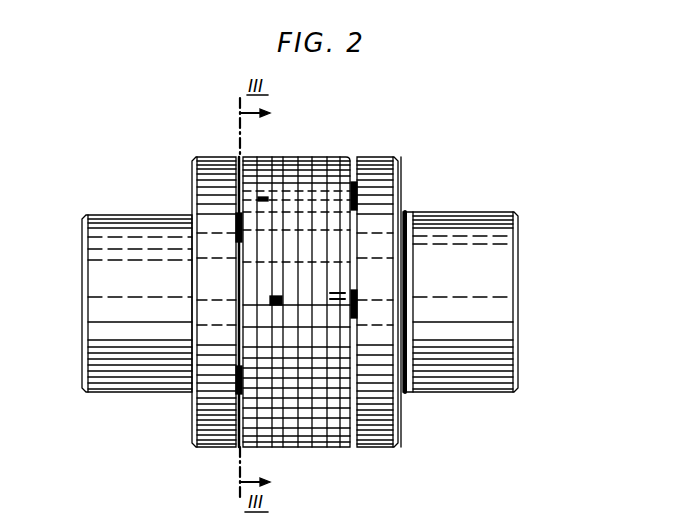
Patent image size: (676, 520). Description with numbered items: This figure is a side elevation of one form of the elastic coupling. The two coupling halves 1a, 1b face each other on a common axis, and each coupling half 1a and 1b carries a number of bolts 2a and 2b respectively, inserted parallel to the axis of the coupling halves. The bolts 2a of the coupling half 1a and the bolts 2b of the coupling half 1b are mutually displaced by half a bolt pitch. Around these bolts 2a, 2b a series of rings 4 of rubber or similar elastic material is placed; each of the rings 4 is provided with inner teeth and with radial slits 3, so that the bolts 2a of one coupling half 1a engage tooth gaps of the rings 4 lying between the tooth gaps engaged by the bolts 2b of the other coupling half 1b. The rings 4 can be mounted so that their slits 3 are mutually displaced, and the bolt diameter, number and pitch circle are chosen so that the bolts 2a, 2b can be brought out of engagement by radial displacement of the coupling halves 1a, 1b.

The coupling half 1a is at (381, 394).
The coupling half 1b is at (223, 389).
The bolts 2a is at (357, 190).
The bolts 2b is at (236, 226).
The radial slits 3 is at (275, 297).
The rings 4 is at (255, 157).